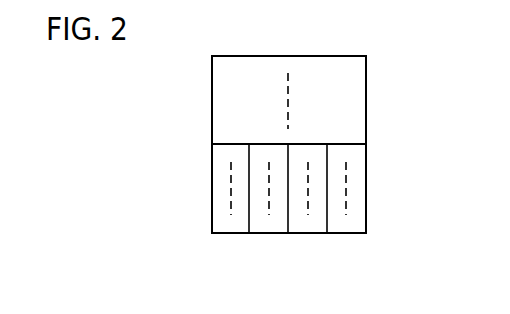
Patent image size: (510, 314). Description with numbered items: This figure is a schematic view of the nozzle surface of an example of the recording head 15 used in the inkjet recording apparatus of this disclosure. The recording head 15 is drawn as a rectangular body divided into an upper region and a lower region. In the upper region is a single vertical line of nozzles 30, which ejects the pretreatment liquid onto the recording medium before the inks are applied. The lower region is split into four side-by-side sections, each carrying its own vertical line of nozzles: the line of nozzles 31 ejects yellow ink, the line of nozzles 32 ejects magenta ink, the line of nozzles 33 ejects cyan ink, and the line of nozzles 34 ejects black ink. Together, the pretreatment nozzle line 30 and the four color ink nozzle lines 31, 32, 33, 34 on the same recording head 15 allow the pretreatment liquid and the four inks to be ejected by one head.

The recording head 15 is at (376, 166).
The vertical line of nozzles 30 is at (289, 90).
The line of nozzles 31 is at (225, 235).
The line of nozzles 32 is at (266, 235).
The line of nozzles 33 is at (307, 235).
The line of nozzles 34 is at (347, 235).